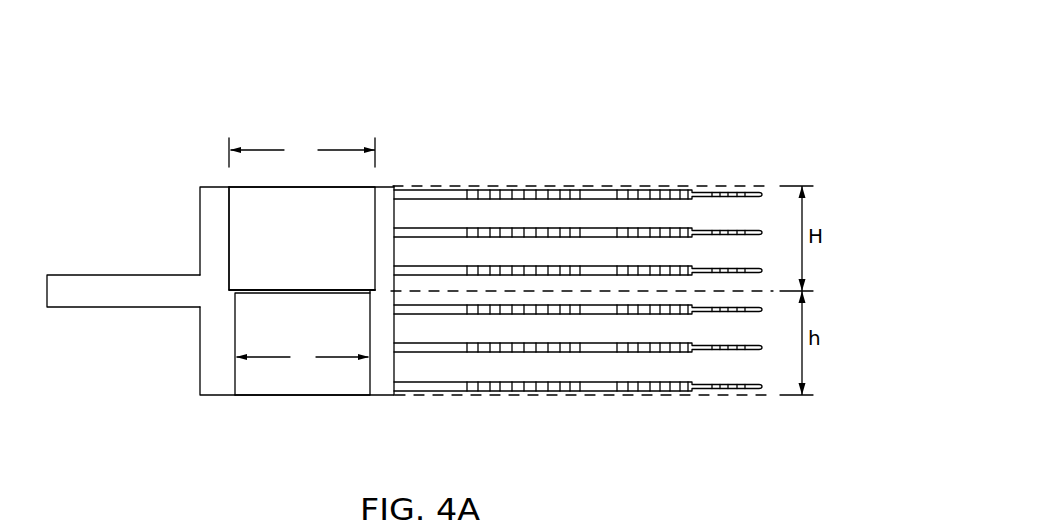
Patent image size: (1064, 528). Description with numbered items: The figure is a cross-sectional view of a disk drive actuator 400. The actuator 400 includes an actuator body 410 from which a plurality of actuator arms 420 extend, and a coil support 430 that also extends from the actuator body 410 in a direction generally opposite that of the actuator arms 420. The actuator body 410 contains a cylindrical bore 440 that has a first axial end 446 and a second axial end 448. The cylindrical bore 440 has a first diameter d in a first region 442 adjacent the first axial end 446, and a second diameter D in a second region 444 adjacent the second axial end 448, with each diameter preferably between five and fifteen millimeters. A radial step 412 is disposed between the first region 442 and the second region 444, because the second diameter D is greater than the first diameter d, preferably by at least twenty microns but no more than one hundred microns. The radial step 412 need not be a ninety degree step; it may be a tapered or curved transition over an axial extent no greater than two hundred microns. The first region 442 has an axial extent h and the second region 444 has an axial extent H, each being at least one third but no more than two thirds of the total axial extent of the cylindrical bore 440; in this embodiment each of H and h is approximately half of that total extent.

The disk drive actuator 400 is at (533, 54).
The actuator body 410 is at (215, 236).
The radial step 412 is at (295, 290).
The actuator arms 420 is at (593, 270).
The coil support 430 is at (85, 297).
The cylindrical bore 440 is at (273, 150).
The first region 442 is at (283, 324).
The second region 444 is at (283, 227).
The first axial end 446 is at (282, 395).
The second axial end 448 is at (248, 187).